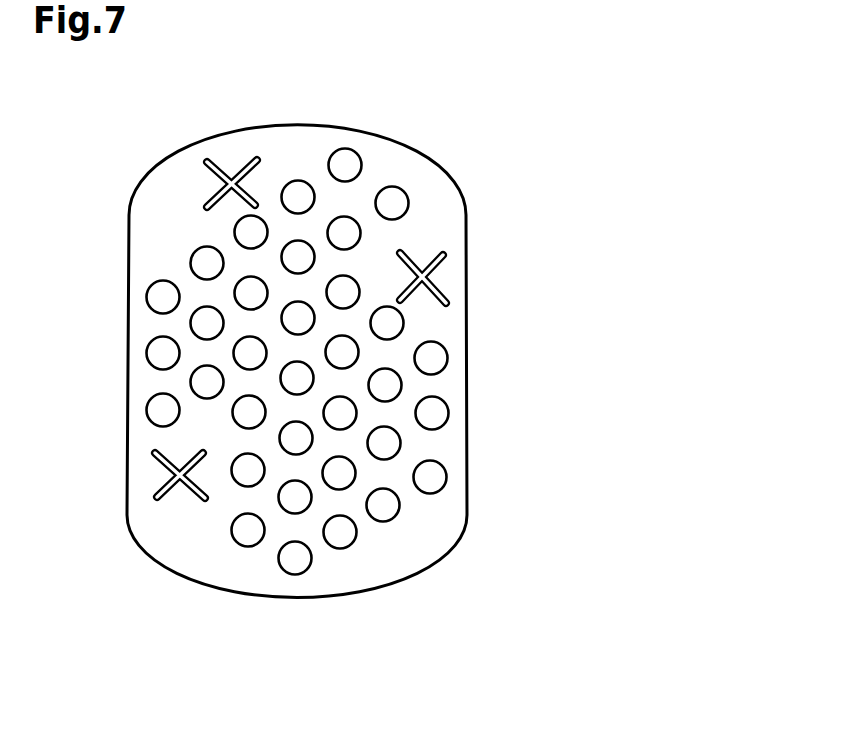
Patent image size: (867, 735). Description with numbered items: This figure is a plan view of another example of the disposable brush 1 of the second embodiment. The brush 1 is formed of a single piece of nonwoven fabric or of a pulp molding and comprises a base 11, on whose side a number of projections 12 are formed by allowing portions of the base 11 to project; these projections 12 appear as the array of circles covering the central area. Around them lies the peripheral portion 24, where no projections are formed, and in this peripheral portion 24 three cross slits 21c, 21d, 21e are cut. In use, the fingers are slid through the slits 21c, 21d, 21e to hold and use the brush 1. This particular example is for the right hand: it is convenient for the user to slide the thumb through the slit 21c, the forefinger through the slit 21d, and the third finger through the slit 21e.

The disposable brush 1 is at (441, 118).
The base 11 is at (455, 389).
The projections 12 is at (153, 303).
The slit 21c is at (165, 492).
The slit 21d is at (223, 165).
The slit 21e is at (435, 263).
The peripheral portion 24 is at (197, 203).